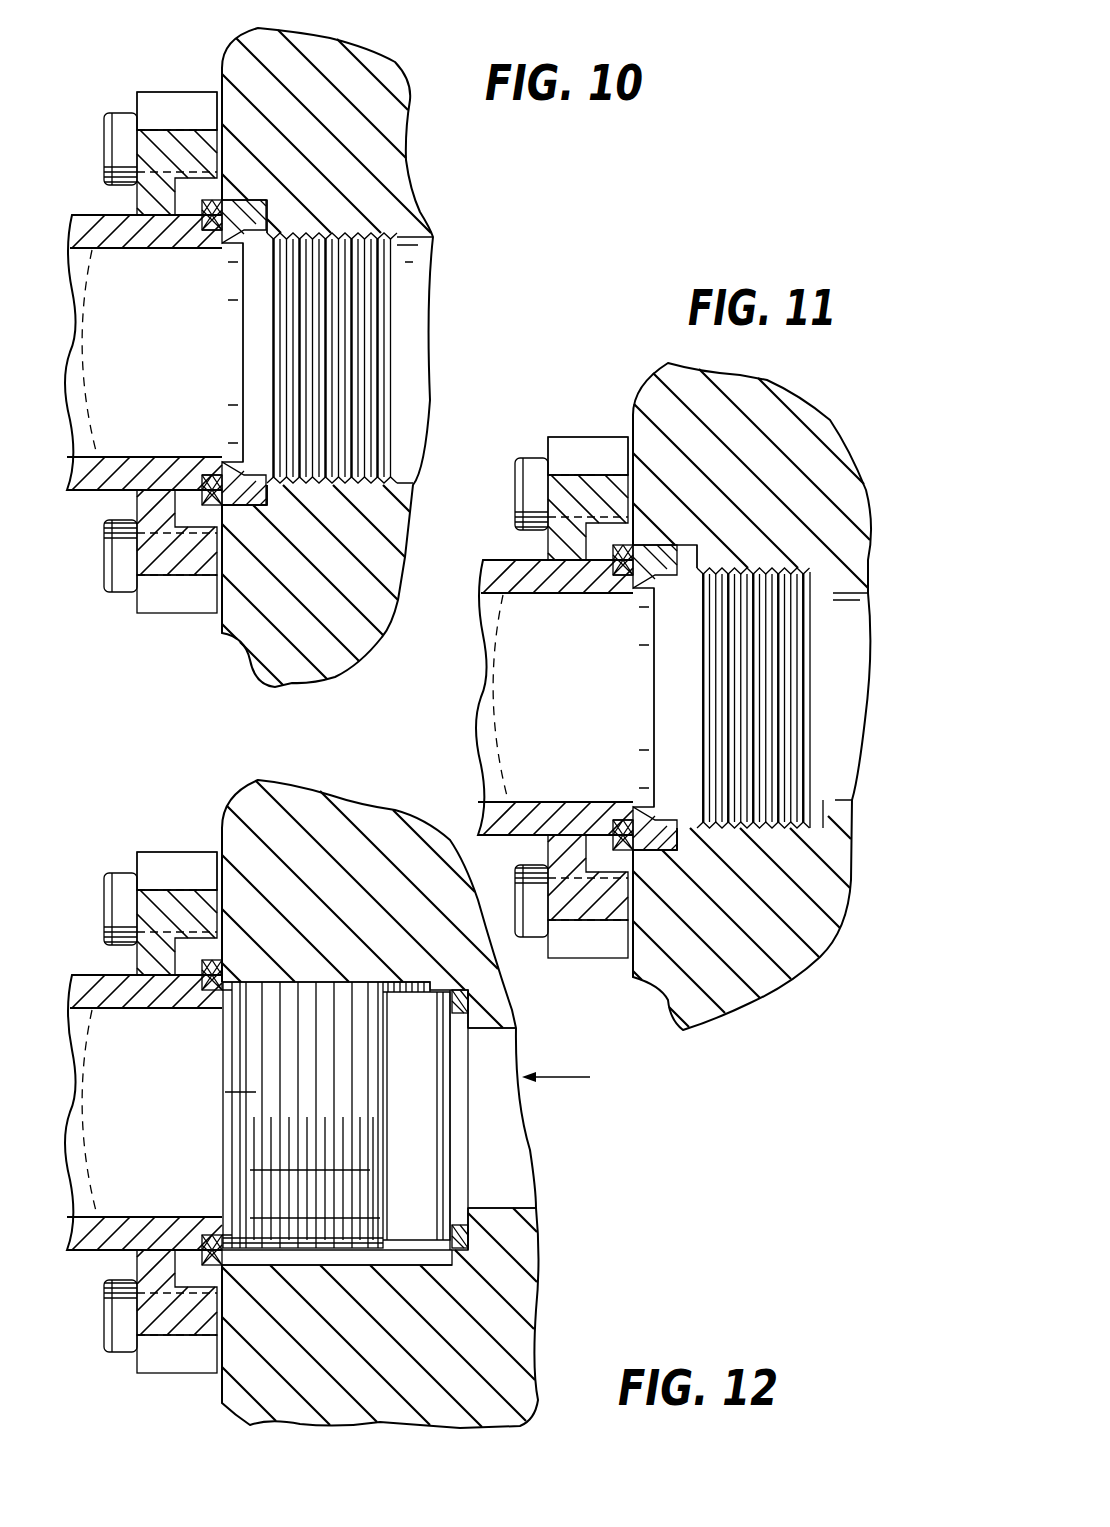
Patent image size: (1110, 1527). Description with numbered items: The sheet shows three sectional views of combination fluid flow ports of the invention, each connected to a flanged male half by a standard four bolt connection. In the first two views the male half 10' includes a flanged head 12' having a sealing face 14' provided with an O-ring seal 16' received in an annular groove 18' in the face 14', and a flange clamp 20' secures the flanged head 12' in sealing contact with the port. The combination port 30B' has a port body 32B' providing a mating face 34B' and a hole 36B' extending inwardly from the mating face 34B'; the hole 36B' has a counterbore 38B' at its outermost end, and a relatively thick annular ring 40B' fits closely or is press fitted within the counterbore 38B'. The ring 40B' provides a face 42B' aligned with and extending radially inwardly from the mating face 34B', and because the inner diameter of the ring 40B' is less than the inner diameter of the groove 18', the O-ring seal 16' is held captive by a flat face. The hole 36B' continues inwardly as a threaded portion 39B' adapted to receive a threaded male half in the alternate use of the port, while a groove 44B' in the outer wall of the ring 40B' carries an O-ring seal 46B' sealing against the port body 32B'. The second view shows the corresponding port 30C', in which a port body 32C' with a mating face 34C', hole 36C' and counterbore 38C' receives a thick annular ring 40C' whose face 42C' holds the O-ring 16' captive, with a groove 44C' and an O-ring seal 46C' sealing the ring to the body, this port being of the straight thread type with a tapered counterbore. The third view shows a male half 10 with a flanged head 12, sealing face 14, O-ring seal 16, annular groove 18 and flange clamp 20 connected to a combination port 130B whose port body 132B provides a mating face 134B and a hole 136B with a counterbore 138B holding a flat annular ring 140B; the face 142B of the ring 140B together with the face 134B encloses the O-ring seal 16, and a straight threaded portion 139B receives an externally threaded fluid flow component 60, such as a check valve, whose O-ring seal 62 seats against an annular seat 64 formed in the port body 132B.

In FIG. 12, the male half 10 is at (158, 835).
In FIG. 10, the male half 10' is at (138, 77).
In FIG. 11, the male half 10' is at (588, 412).
In FIG. 12, the flanged head 12 is at (121, 1085).
In FIG. 10, the flanged head 12' is at (122, 324).
In FIG. 11, the flanged head 12' is at (526, 697).
In FIG. 12, the sealing face 14 is at (337, 1313).
In FIG. 10, the sealing face 14' is at (267, 552).
In FIG. 11, the sealing face 14' is at (672, 888).
In FIG. 12, the O-ring seal 16 is at (173, 1112).
In FIG. 10, the O-ring seal 16' is at (165, 352).
In FIG. 11, the O-ring seal 16' is at (575, 697).
In FIG. 12, the annular groove 18 is at (166, 1112).
In FIG. 10, the annular groove 18' is at (171, 350).
In FIG. 11, the annular groove 18' is at (581, 688).
In FIG. 12, the flange clamp 20 is at (146, 1133).
In FIG. 10, the flange clamp 20' is at (148, 389).
In FIG. 11, the flange clamp 20' is at (571, 733).
In FIG. 10, the combination port 30B' is at (333, 350).
In FIG. 11, the combination port 30C' is at (757, 690).
In FIG. 10, the port body 32B' is at (373, 357).
In FIG. 11, the port body 32C' is at (774, 698).
In FIG. 10, the mating face 34B' is at (197, 387).
In FIG. 11, the mating face 34C' is at (666, 748).
In FIG. 10, the hole 36B' is at (396, 358).
In FIG. 11, the hole 36C' is at (698, 698).
In FIG. 10, the counterbore 38B' is at (319, 377).
In FIG. 11, the counterbore 38C' is at (727, 722).
In FIG. 10, the threaded portion 39B' is at (447, 360).
In FIG. 10, the annular ring 40B' is at (171, 358).
In FIG. 11, the annular ring 40C' is at (589, 707).
In FIG. 10, the face 42B' is at (173, 352).
In FIG. 11, the face 42C' is at (591, 697).
In FIG. 10, the groove 44B' is at (190, 352).
In FIG. 11, the groove 44C' is at (604, 697).
In FIG. 10, the O-ring seal 46B' is at (253, 301).
In FIG. 11, the O-ring seal 46C' is at (684, 638).
In FIG. 12, the fluid flow component 60 is at (255, 1097).
In FIG. 12, the O-ring seal 62 is at (445, 965).
In FIG. 12, the annular seat 64 is at (455, 1020).
In FIG. 12, the combination port 130B is at (395, 760).
In FIG. 12, the port body 132B is at (505, 1270).
In FIG. 12, the mating face 134B is at (222, 1378).
In FIG. 12, the hole 136B is at (478, 1140).
In FIG. 12, the counterbore 138B is at (293, 1268).
In FIG. 12, the straight threaded portion 139B is at (417, 1240).
In FIG. 12, the flat annular ring 140B is at (230, 1210).
In FIG. 12, the face 142B is at (222, 1130).